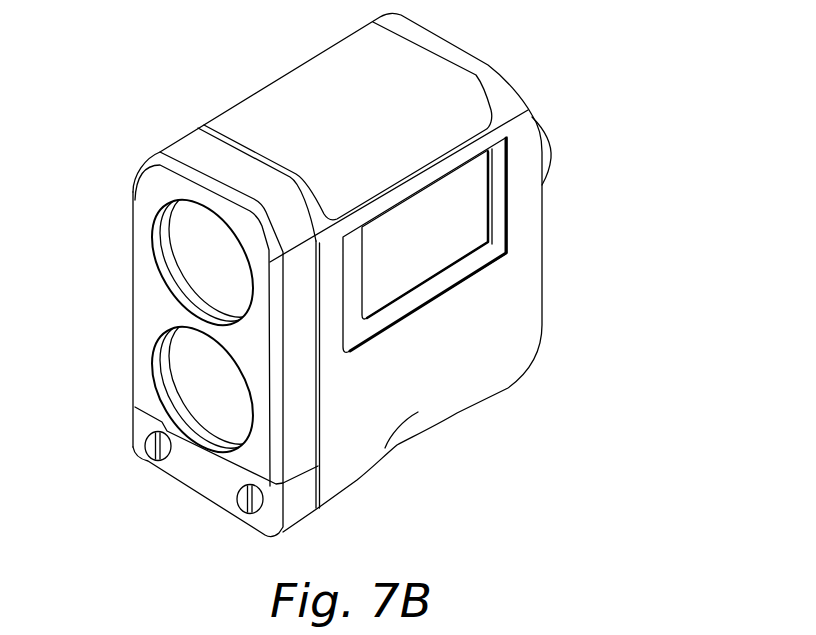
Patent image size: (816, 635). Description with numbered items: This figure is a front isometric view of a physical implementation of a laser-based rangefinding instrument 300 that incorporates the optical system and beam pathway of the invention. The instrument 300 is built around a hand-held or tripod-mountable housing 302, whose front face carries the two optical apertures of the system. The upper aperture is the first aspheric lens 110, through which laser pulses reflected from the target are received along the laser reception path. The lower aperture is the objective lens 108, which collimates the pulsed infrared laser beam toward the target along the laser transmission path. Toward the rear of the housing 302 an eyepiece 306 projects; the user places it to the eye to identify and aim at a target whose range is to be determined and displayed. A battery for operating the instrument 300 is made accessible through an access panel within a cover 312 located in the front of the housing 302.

The laser-based rangefinding instrument 300 is at (510, 483).
The housing 302 is at (287, 72).
The eyepiece 306 is at (560, 142).
The cover 312 is at (147, 348).
The first aspheric lens 110 is at (203, 256).
The objective lens 108 is at (200, 370).